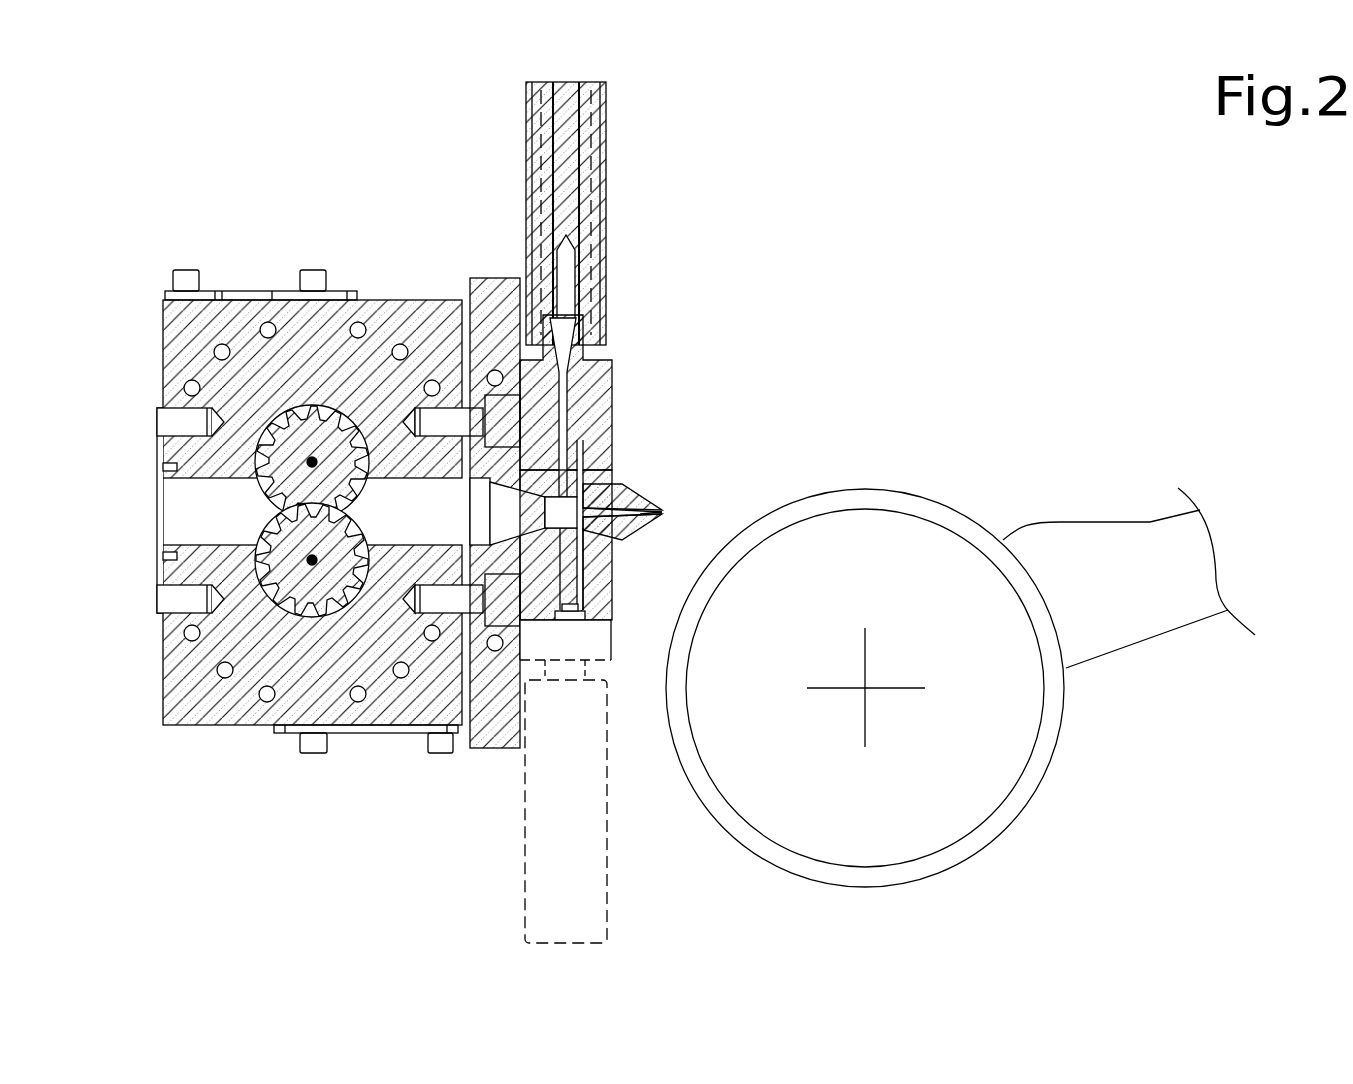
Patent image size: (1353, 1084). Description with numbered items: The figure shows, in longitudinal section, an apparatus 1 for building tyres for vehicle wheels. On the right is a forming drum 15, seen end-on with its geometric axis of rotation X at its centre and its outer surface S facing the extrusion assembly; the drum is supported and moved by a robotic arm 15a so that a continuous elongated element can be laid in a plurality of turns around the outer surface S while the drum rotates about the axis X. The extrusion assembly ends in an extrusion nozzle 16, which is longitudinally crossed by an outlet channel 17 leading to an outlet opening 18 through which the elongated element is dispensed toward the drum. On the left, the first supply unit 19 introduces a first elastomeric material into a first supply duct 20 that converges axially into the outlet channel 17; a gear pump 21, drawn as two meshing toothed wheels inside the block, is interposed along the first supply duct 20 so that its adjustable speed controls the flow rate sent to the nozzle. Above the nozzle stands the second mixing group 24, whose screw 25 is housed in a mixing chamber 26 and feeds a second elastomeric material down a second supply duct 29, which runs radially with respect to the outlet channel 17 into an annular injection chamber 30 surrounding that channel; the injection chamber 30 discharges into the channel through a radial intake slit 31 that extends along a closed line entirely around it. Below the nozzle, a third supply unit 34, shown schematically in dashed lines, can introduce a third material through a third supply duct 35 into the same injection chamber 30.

The apparatus for building tyres 1 is at (750, 216).
The forming drum 15 is at (1020, 797).
The robotic arm 15a is at (1157, 615).
The extrusion nozzle 16 is at (640, 493).
The outlet channel 17 is at (595, 502).
The outlet opening 18 is at (662, 510).
The first supply unit 19 is at (247, 277).
The first supply duct 20 is at (512, 517).
The gear pump 21 is at (293, 550).
The second mixing group 24 is at (612, 103).
The screw 25 is at (572, 160).
The mixing chamber 26 is at (570, 186).
The second supply duct 29 is at (578, 410).
The injection chamber 30 is at (570, 540).
The radial intake slit 31 is at (650, 517).
The third supply unit 34 is at (612, 862).
The third supply duct 35 is at (570, 592).
The geometric axis of rotation X is at (865, 688).
The outer surface S is at (862, 490).